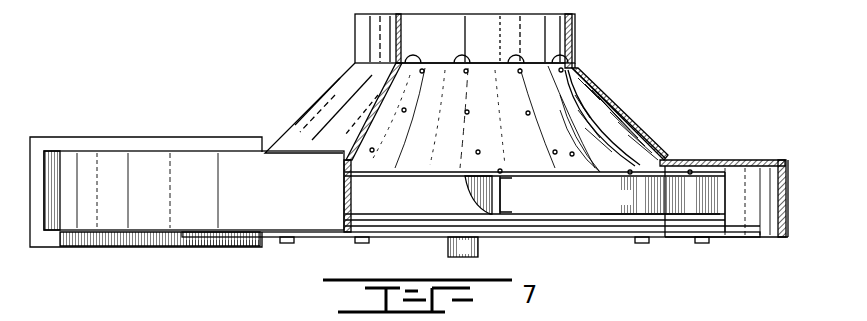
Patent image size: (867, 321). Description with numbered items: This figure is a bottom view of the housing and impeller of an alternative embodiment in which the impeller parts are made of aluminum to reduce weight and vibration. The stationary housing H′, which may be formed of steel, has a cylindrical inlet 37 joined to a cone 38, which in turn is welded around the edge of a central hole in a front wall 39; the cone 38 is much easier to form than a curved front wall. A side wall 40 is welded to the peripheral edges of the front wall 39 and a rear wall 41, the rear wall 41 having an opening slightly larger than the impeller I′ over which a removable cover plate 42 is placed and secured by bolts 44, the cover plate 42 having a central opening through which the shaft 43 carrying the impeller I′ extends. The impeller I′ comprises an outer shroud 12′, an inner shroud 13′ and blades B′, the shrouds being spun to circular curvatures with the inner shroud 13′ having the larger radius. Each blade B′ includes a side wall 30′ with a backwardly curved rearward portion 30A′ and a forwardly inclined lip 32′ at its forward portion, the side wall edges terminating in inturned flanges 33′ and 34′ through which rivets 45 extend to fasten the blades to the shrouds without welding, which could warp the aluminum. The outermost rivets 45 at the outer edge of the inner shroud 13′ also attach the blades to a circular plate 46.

The cylindrical inlet 37 is at (357, 40).
The cone 38 is at (325, 93).
The forwardly inclined lip 32′ is at (425, 60).
The impeller I′ is at (480, 68).
The housing H′ is at (192, 148).
The side wall 40 is at (40, 160).
The front wall 39 is at (706, 160).
The rivets 45 is at (404, 110).
The outer shroud 12′ is at (537, 143).
The blades B′ is at (470, 182).
The inturned flange 33′ is at (505, 178).
The inner shroud 13′ is at (380, 201).
The rearward portion 30A′ is at (462, 190).
The inturned flange 34′ is at (508, 210).
The side wall 30′ is at (635, 200).
The cover plate 42 is at (391, 238).
The shaft 43 is at (478, 250).
The bolts 44 is at (290, 243).
The circular plate 46 is at (718, 234).
The rear wall 41 is at (772, 240).